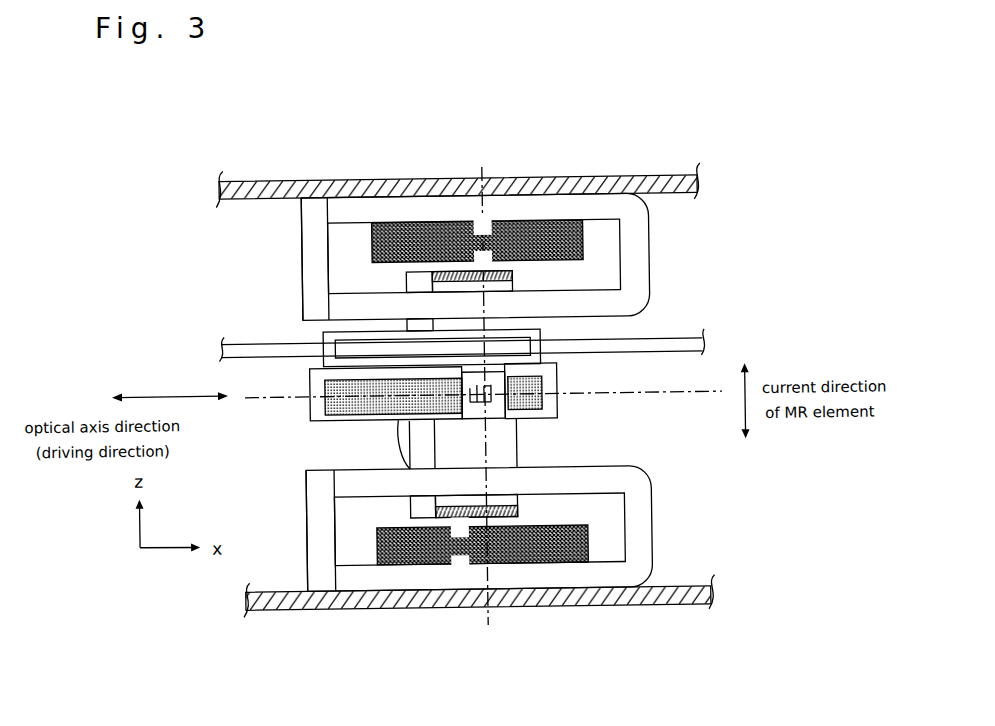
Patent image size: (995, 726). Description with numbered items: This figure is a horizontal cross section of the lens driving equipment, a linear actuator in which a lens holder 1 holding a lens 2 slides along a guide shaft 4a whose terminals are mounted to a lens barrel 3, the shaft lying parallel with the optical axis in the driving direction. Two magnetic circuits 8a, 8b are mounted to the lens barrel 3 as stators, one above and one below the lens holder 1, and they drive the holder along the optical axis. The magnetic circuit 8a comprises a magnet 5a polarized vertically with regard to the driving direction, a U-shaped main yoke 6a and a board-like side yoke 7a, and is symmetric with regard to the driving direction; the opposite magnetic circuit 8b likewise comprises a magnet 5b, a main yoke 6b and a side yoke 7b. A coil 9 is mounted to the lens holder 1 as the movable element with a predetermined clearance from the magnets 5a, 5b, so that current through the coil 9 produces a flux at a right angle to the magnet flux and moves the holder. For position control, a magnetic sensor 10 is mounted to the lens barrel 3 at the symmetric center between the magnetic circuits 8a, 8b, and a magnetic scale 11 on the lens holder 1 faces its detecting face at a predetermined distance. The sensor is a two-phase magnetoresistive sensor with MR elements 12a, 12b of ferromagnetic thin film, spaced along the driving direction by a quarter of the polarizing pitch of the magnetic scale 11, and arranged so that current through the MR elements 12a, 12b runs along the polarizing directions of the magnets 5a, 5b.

The lens holder 1 is at (399, 422).
The lens 2 is at (397, 452).
The lens barrel 3 is at (275, 182).
The guide shaft 4a is at (633, 350).
The magnet 5a is at (454, 245).
The magnet 5b is at (413, 559).
The main yoke 6a is at (402, 206).
The main yoke 6b is at (375, 581).
The side yoke 7a is at (314, 248).
The side yoke 7b is at (316, 560).
The magnetic circuit 8a is at (436, 78).
The magnetic circuit 8b is at (378, 672).
The coil 9 is at (515, 511).
The magnetic sensor 10 is at (565, 381).
The magnetic scale 11 is at (557, 409).
The MR element 12a is at (487, 405).
The MR element 12b is at (488, 382).